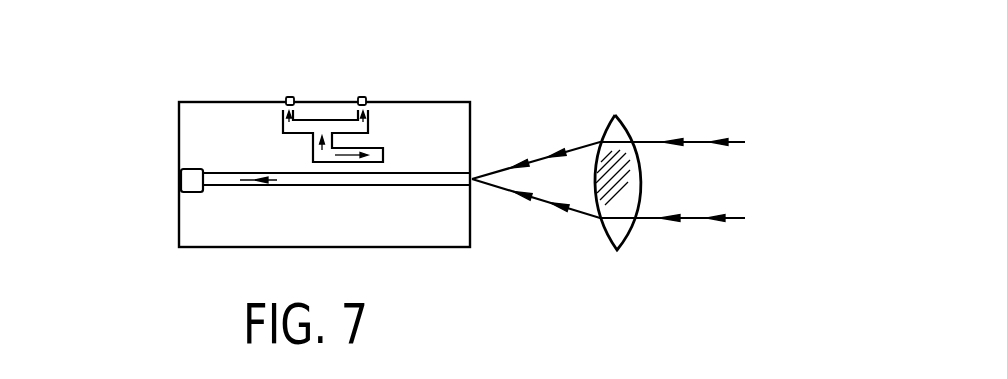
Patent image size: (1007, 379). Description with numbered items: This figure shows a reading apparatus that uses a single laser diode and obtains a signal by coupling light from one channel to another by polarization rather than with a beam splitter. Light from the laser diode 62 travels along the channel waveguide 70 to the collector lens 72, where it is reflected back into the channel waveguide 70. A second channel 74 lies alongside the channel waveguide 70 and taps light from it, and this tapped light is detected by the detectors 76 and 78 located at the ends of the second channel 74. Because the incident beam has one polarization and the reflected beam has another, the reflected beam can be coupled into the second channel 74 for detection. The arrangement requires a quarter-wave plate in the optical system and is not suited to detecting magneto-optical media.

The laser diode 62 is at (180, 179).
The channel waveguide 70 is at (232, 173).
The collector lens 72 is at (608, 236).
The second channel 74 is at (375, 138).
The detector 76 is at (289, 96).
The detector 78 is at (362, 96).